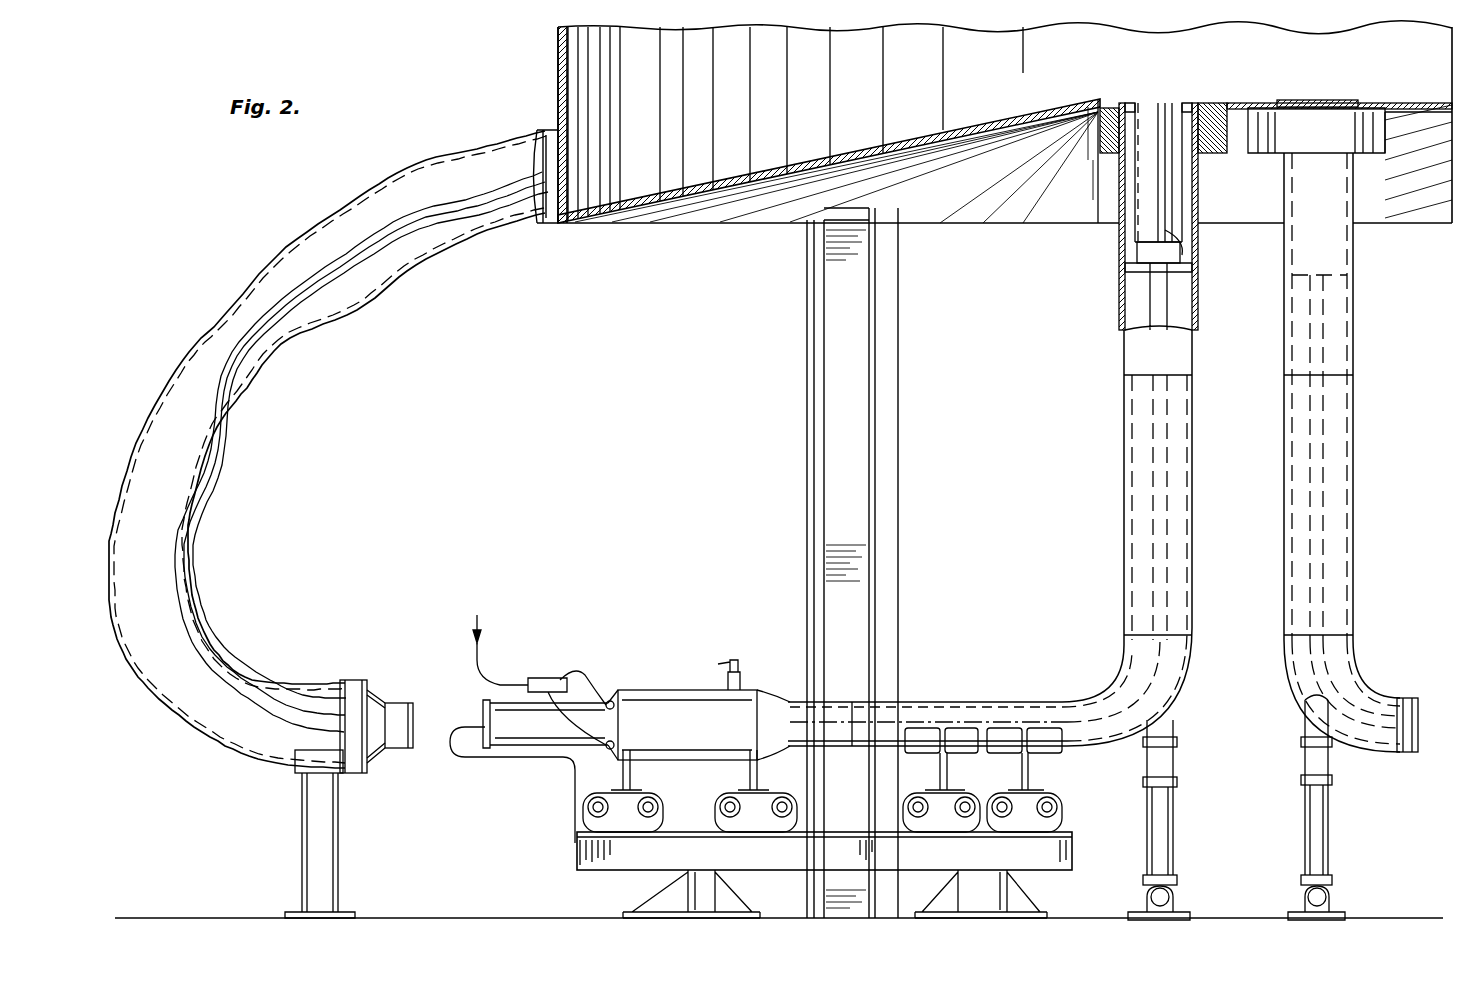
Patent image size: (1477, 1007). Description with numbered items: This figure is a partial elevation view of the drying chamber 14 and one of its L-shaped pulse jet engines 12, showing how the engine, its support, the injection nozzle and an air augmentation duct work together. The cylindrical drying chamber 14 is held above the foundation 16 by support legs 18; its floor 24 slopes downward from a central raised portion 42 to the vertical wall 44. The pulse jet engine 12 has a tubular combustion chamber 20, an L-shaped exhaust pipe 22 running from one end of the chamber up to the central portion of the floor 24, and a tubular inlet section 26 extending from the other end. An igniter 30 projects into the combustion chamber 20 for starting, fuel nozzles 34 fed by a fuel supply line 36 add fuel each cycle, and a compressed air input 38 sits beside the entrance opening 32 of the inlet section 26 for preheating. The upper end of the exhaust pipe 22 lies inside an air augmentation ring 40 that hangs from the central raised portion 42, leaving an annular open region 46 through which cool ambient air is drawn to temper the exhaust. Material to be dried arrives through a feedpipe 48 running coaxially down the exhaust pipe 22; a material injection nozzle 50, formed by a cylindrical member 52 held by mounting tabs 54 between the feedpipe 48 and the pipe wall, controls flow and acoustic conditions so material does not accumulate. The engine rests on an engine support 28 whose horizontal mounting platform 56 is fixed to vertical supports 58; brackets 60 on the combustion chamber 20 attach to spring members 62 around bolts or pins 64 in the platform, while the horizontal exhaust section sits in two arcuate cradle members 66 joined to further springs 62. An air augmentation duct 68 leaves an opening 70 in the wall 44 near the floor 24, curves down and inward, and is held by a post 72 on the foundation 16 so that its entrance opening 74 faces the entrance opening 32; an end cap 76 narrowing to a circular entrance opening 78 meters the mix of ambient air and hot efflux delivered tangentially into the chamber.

The pulse jet engine 12 is at (955, 698).
The drying chamber 14 is at (598, 75).
The foundation 16 is at (418, 910).
The support legs 18 is at (886, 448).
The combustion chamber 20 is at (678, 690).
The exhaust pipe 22 is at (1124, 478).
The floor 24 is at (838, 152).
The inlet section 26 is at (538, 742).
The engine support 28 is at (1050, 848).
The igniter 30 is at (737, 660).
The entrance opening 32 is at (482, 708).
The fuel nozzles 34 is at (610, 700).
The fuel supply line 36 is at (482, 648).
The compressed air input 38 is at (456, 758).
The air augmentation ring 40 is at (1085, 160).
The central raised portion 42 is at (1250, 108).
The vertical wall 44 is at (556, 32).
The annular open region 46 is at (1108, 108).
The feedpipe 48 is at (1165, 306).
The material injection nozzle 50 is at (1182, 236).
The cylindrical member 52 is at (1155, 103).
The mounting tabs 54 is at (1128, 104).
The horizontal mounting platform 56 is at (612, 856).
The vertical supports 58 is at (695, 882).
The bracket 60 is at (632, 775).
The spring member 62 is at (585, 800).
The bolts or pins 64 is at (660, 808).
The arcuate cradle members 66 is at (942, 766).
The air augmentation duct 68 is at (300, 345).
The opening 70 is at (546, 200).
The post 72 is at (325, 846).
The air augmentation entrance opening 74 is at (352, 680).
The end cap 76 is at (392, 700).
The circular entrance opening 78 is at (410, 705).